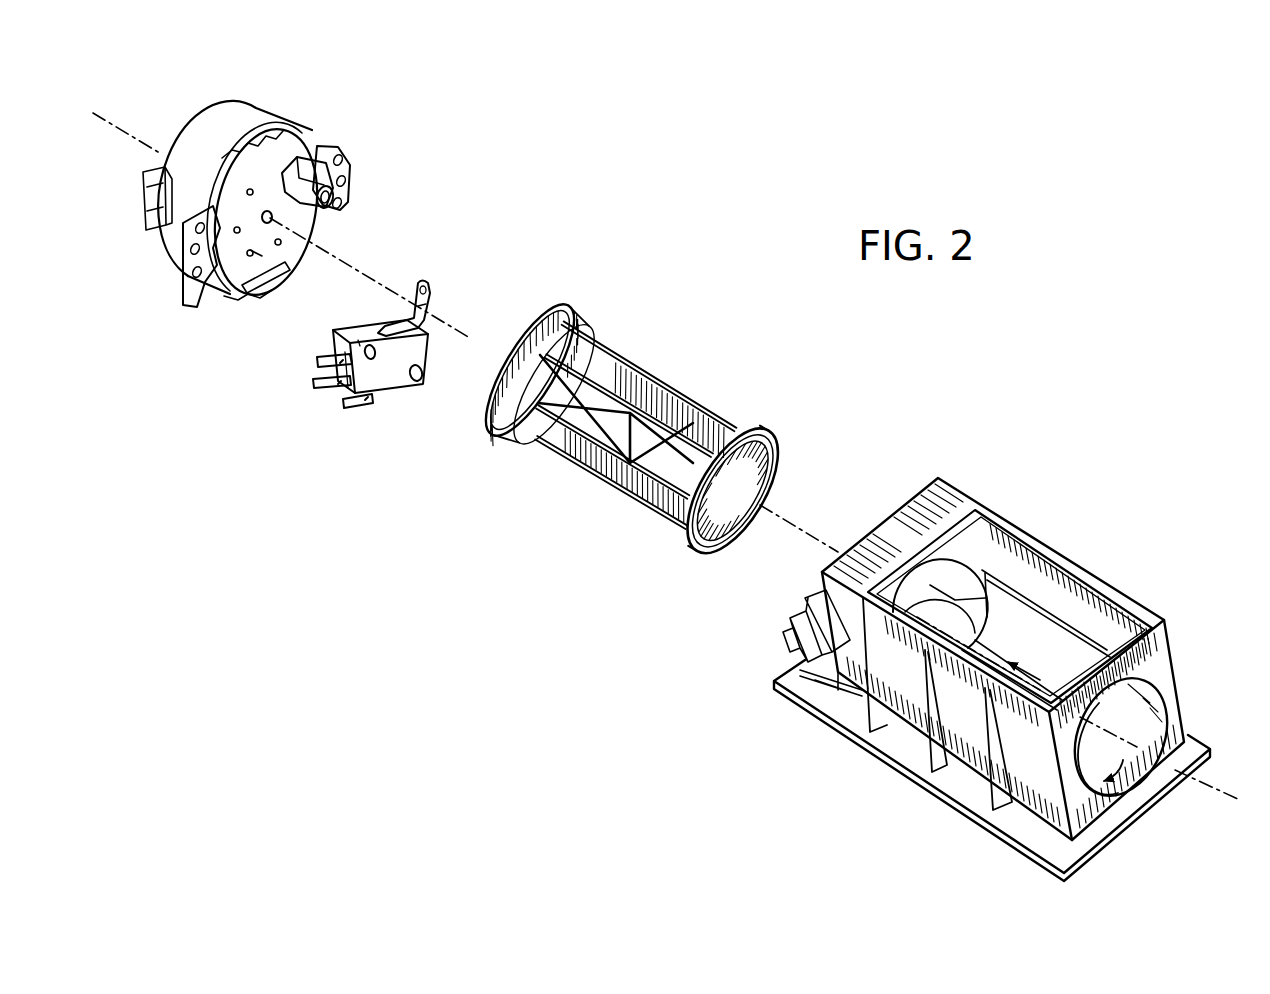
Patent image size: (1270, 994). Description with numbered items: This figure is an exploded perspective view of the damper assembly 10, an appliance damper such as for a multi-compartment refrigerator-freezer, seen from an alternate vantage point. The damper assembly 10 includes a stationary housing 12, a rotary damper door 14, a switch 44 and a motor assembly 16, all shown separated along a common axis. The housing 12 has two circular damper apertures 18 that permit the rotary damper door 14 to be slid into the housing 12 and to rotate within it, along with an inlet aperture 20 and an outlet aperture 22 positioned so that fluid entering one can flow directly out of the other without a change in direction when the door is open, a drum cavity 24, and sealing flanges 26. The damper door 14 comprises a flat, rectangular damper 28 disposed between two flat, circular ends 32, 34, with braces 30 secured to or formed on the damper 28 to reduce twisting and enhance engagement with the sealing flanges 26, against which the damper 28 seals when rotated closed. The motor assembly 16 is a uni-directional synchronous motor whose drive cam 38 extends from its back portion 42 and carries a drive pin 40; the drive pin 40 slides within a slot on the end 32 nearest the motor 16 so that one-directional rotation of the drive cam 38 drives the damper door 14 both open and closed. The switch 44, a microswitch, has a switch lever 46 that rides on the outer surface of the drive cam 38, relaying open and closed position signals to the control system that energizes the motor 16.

The damper assembly 10 is at (296, 755).
The stationary housing 12 is at (1010, 646).
The rotary damper door 14 is at (650, 435).
The motor assembly 16 is at (279, 220).
The circular damper apertures 18 is at (1147, 713).
The inlet aperture 20 is at (1090, 586).
The outlet aperture 22 is at (1123, 762).
The drum cavity 24 is at (928, 615).
The sealing flanges 26 is at (1040, 607).
The damper 28 is at (642, 393).
The braces 30 is at (567, 437).
The end 32 is at (553, 303).
The end 34 is at (753, 473).
The drive cam 38 is at (320, 182).
The drive pin 40 is at (274, 219).
The back portion 42 is at (238, 268).
The switch 44 is at (402, 344).
The switch lever 46 is at (424, 288).